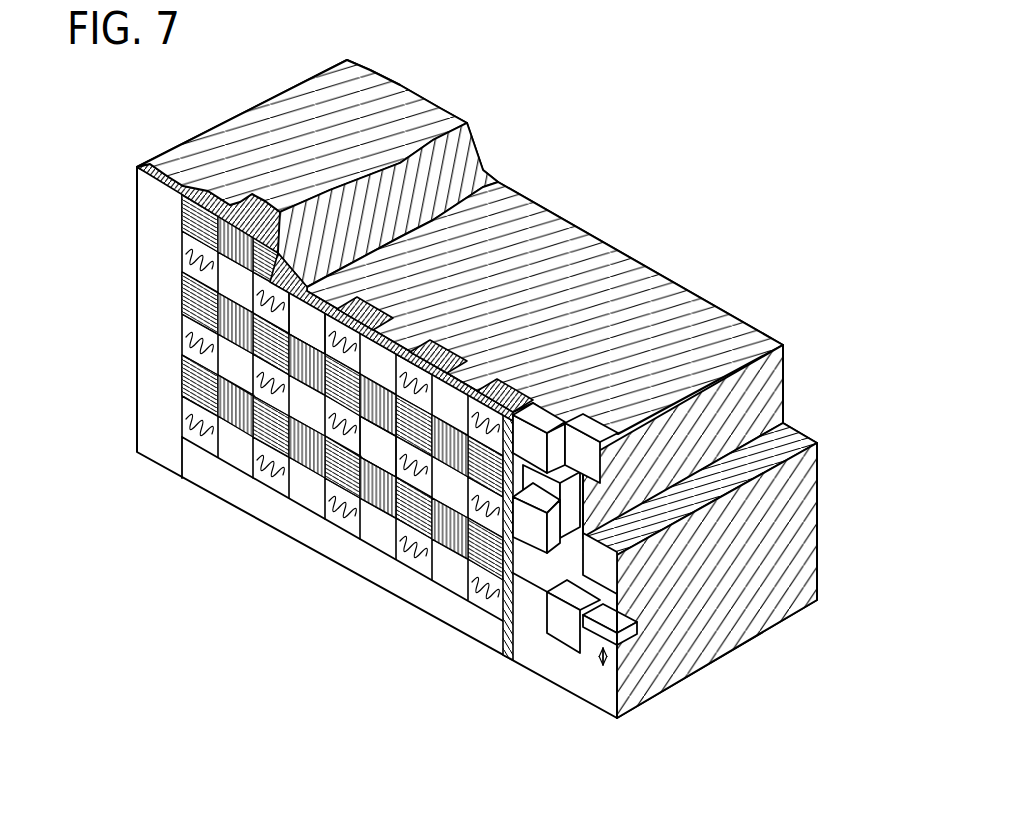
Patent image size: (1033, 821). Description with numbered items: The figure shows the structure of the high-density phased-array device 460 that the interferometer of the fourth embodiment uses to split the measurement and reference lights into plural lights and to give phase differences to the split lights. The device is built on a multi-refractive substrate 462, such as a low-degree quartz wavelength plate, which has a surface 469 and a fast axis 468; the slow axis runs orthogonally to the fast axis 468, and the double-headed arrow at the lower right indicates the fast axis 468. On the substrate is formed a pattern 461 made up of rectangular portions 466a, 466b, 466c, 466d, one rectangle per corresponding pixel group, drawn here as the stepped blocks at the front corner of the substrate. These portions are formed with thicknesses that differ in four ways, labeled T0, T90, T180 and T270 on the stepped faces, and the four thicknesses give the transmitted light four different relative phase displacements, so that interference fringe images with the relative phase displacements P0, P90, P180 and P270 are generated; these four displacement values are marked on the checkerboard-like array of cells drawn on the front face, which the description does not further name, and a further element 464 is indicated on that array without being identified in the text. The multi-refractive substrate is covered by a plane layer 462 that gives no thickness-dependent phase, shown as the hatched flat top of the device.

The high-density phased-array device 460 is at (230, 112).
The pattern 461 is at (208, 458).
The multi-refractive substrate 462 is at (376, 118).
The pixel array 464 is at (320, 434).
The pattern portion 466a is at (605, 473).
The pattern portion 466b is at (644, 519).
The pattern portion 466c is at (556, 610).
The pattern portion 466d is at (598, 607).
The fast axis 468 is at (613, 658).
The surface 469 is at (600, 683).
The relative phase displacement P0 is at (383, 500).
The relative phase displacement P90 is at (385, 455).
The relative phase displacement P180 is at (360, 475).
The relative phase displacement P270 is at (340, 430).
The pattern thickness T0 is at (645, 603).
The pattern thickness T90 is at (535, 418).
The pattern thickness T180 is at (602, 505).
The pattern thickness T270 is at (592, 432).